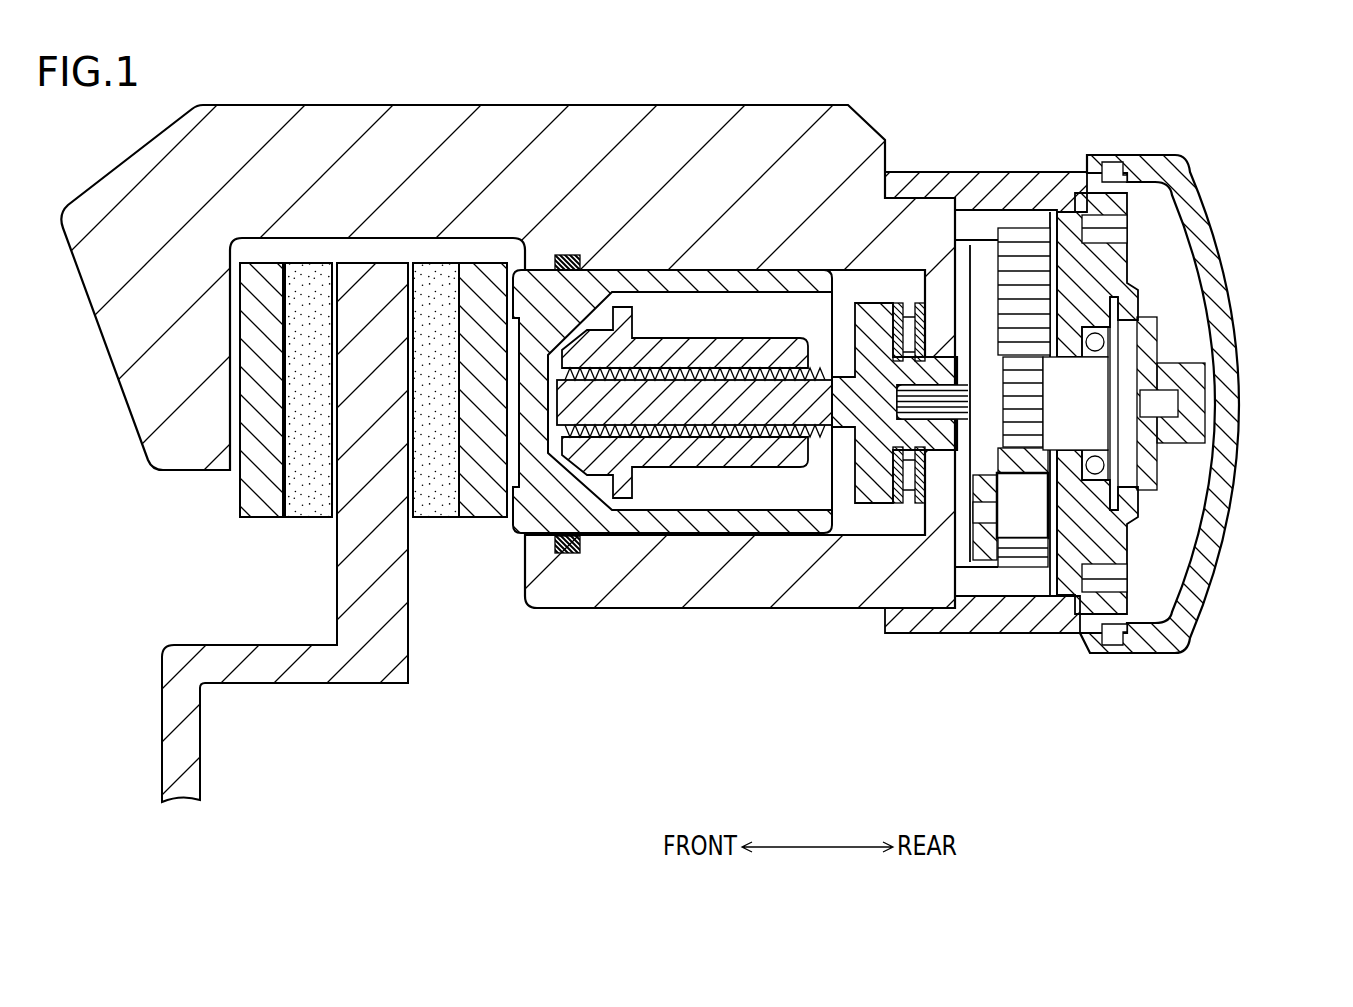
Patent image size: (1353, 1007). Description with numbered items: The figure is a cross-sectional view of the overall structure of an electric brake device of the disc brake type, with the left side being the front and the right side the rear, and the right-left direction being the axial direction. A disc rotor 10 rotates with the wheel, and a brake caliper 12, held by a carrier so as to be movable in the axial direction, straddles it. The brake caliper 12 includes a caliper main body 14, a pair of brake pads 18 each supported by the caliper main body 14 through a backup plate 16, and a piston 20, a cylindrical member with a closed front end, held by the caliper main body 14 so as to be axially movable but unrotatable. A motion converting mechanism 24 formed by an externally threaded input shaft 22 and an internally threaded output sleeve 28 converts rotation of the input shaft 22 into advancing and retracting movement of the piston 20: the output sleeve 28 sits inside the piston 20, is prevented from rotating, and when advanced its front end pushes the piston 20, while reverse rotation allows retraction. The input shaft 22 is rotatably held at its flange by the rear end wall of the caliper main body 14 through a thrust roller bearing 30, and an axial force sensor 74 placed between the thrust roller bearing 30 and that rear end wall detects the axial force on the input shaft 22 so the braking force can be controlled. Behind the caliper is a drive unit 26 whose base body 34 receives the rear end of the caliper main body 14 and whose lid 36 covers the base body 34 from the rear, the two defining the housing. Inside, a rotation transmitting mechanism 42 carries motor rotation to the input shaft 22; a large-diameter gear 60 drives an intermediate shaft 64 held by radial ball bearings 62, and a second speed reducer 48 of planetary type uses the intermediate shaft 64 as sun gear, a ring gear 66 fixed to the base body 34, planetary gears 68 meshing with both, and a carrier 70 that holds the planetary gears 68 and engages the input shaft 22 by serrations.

The disc rotor 10 is at (385, 670).
The brake caliper 12 is at (1000, 752).
The caliper main body 14 is at (716, 120).
The backup plates 16 is at (258, 505).
The brake pads 18 is at (311, 505).
The piston 20 is at (602, 530).
The input shaft 22 is at (780, 410).
The motion converting mechanism 24 is at (725, 492).
The drive unit 26 is at (1270, 262).
The output sleeve 28 is at (694, 457).
The thrust roller bearing 30 is at (907, 490).
The base body 34 is at (1025, 180).
The lid 36 is at (1192, 200).
The rotation transmitting mechanism 42 is at (1187, 506).
The second speed reducer 48 is at (980, 210).
The large-diameter gear 60 is at (1146, 334).
The radial ball bearings 62 is at (1136, 284).
The intermediate shaft 64 is at (1080, 405).
The ring gear 66 is at (1032, 222).
The planetary gears 68 is at (1022, 562).
The carrier 70 is at (983, 553).
The axial force sensor 74 is at (937, 455).